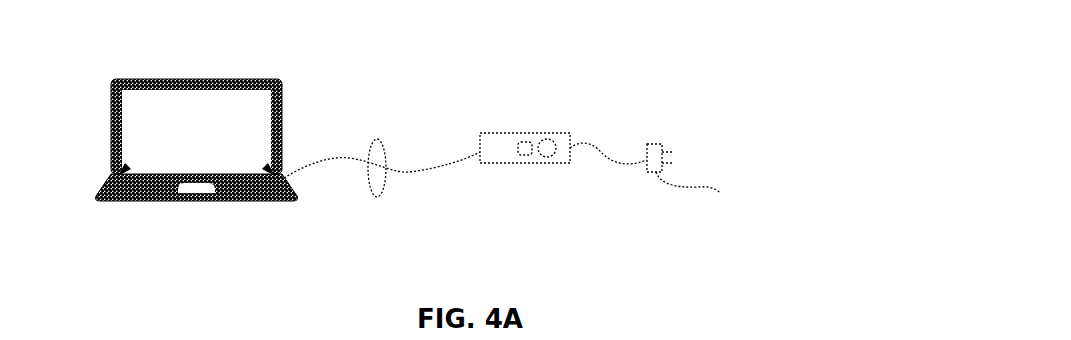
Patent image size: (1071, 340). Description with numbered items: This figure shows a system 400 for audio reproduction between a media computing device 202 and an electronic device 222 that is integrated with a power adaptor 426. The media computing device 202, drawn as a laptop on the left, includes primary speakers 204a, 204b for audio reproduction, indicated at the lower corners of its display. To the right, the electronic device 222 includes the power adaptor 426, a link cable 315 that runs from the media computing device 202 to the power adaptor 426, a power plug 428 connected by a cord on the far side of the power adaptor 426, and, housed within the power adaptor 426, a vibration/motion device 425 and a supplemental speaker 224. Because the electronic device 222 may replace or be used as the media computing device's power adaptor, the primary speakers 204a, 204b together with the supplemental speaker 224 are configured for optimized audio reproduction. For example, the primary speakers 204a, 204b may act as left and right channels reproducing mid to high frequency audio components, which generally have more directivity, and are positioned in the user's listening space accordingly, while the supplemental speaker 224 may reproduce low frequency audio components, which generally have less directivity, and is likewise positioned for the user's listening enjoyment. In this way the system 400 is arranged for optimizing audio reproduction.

The system 400 is at (838, 63).
The media computing device 202 is at (87, 209).
The primary speaker 204a is at (124, 170).
The primary speaker 204b is at (269, 170).
The electronic device 222 is at (357, 208).
The link cable 315 is at (379, 138).
The vibration/motion device 425 is at (505, 135).
The power adaptor 426 is at (541, 132).
The supplemental speaker 224 is at (568, 135).
The power plug 428 is at (715, 175).